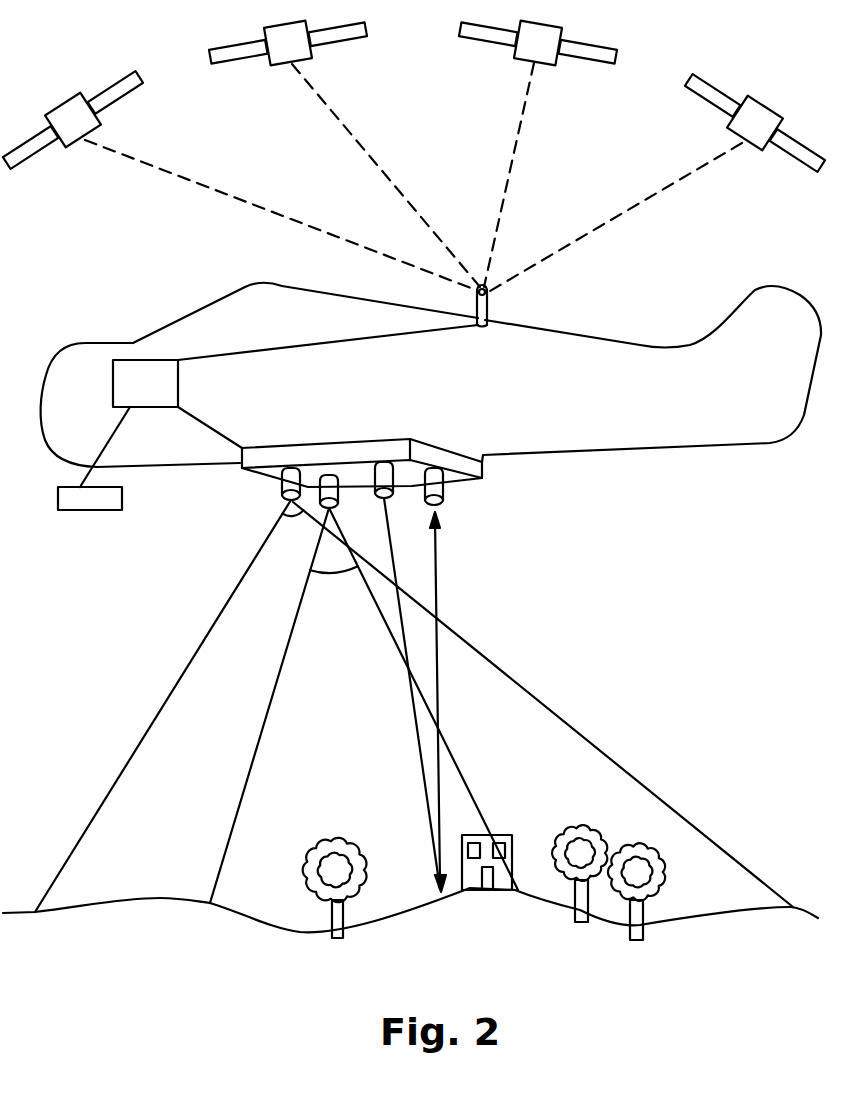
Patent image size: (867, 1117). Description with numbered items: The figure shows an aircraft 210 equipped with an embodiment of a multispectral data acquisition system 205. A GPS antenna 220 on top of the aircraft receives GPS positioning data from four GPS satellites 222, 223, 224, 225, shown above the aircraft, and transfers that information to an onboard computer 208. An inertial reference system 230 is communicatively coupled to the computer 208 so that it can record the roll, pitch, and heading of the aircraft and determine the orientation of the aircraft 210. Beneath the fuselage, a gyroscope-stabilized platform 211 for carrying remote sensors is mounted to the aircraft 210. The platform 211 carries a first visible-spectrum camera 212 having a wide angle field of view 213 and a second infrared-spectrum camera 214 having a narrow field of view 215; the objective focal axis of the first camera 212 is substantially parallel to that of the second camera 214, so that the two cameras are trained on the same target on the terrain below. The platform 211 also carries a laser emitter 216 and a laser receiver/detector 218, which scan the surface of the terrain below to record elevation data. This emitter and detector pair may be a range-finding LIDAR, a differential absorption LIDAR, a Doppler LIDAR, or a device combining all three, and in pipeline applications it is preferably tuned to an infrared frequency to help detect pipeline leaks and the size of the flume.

The multispectral data acquisition system 205 is at (590, 547).
The onboard computer 208 is at (178, 388).
The aircraft 210 is at (685, 444).
The gyroscope-stabilized platform 211 is at (440, 455).
The first visible-spectrum camera 212 is at (280, 487).
The wide angle field of view 213 is at (293, 520).
The second infrared-spectrum camera 214 is at (328, 482).
The narrow field of view 215 is at (338, 574).
The laser emitter 216 is at (383, 472).
The laser receiver/detector 218 is at (433, 488).
The GPS antenna 220 is at (488, 312).
The GPS satellite 222 is at (60, 102).
The GPS satellite 223 is at (265, 32).
The GPS satellite 224 is at (562, 33).
The GPS satellite 225 is at (763, 103).
The inertial reference system 230 is at (87, 510).